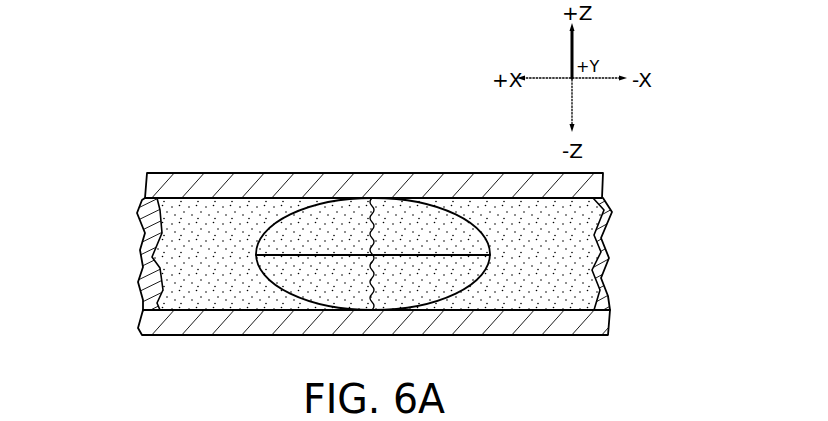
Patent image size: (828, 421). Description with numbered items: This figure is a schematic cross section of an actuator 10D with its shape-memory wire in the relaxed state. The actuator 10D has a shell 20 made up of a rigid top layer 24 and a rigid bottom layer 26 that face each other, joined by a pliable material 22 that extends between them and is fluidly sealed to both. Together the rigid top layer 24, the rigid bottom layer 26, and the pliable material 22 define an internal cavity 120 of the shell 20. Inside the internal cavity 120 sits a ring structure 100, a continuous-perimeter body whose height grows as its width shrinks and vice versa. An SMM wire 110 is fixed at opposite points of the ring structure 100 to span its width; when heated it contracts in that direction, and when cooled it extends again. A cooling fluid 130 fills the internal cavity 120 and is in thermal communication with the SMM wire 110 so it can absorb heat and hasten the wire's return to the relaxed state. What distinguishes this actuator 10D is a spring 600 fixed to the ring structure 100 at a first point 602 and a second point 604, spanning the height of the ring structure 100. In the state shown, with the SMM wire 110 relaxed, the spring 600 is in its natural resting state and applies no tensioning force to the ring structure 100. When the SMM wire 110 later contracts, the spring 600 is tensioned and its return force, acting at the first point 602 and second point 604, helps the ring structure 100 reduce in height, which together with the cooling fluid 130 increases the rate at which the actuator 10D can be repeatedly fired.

The actuator 10D is at (372, 208).
The shell 20 is at (372, 225).
The pliable material 22 is at (145, 252).
The rigid top layer 24 is at (448, 190).
The rigid bottom layer 26 is at (188, 325).
The ring structure 100 is at (485, 277).
The SMM wire 110 is at (455, 256).
The internal cavity 120 is at (593, 241).
The cooling fluid 130 is at (170, 270).
The spring 600 is at (372, 287).
The first point 602 is at (377, 198).
The second point 604 is at (375, 312).